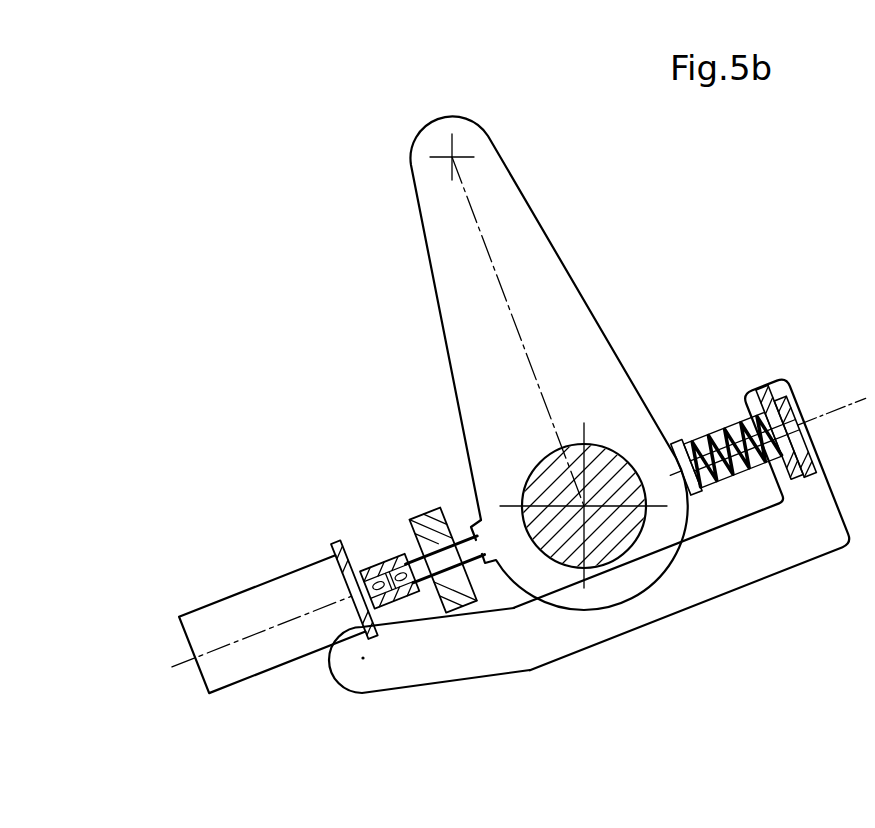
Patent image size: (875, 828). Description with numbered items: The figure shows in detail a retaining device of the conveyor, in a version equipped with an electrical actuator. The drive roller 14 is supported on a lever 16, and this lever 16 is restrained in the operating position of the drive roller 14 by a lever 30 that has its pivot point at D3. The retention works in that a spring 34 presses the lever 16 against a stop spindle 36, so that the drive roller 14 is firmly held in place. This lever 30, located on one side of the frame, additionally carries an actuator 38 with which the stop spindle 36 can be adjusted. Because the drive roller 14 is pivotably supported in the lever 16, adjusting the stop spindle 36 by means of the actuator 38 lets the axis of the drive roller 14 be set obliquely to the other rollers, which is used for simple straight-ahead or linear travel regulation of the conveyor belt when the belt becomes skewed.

The drive roller 14 is at (607, 484).
The lever 16 is at (513, 250).
The lever 30 is at (560, 663).
The spring 34 is at (706, 437).
The stop spindle 36 is at (413, 546).
The actuator 38 is at (258, 612).
The pivot point D3 is at (357, 670).